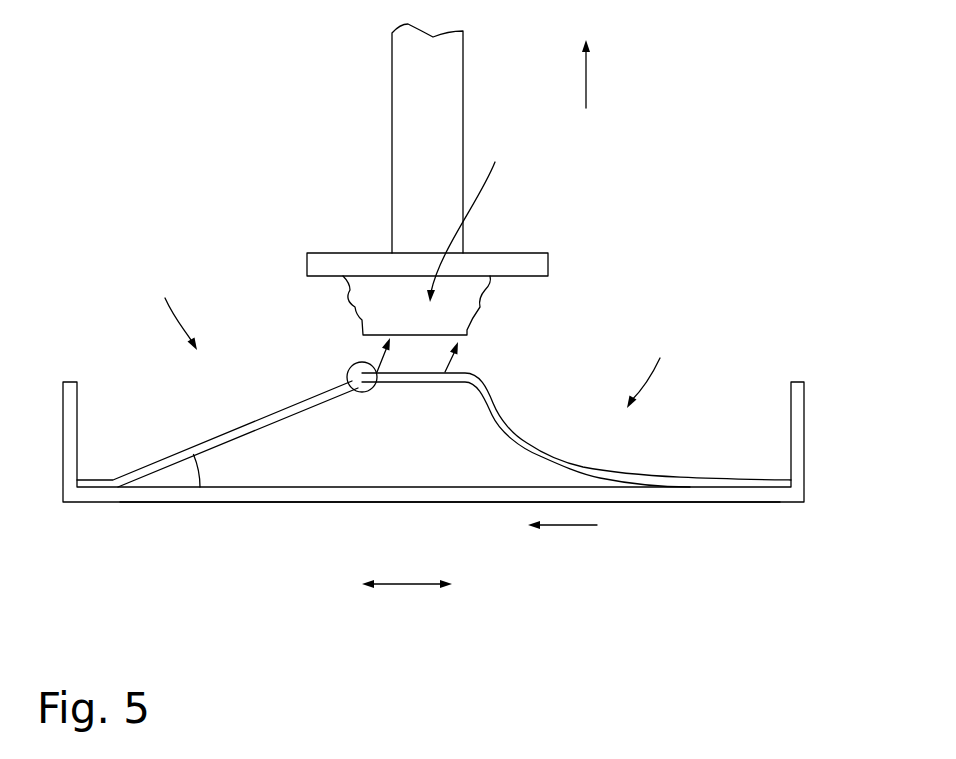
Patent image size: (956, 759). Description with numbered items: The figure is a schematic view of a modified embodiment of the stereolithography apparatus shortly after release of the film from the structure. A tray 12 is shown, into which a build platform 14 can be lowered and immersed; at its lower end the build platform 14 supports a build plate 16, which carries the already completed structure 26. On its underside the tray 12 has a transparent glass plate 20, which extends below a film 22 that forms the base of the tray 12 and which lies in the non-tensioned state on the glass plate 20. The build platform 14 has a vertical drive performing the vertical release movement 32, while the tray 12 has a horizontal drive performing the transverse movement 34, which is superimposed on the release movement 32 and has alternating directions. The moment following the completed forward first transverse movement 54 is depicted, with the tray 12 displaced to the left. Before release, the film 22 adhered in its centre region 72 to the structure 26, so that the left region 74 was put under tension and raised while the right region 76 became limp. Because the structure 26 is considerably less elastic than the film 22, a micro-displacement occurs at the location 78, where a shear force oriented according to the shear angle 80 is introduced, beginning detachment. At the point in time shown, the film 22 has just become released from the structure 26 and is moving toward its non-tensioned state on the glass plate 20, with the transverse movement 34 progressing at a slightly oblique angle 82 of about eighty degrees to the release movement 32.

The tray 12 is at (800, 441).
The build platform 14 is at (447, 73).
The build plate 16 is at (529, 265).
The glass plate 20 is at (262, 495).
The film 22 is at (672, 487).
The structure 26 is at (476, 300).
The release movement 32 is at (586, 87).
The transverse movement 34 is at (407, 586).
The first transverse movement 54 is at (570, 527).
The centre region 72 is at (93, 530).
The left region 74 is at (176, 311).
The right region 76 is at (650, 371).
The micro-displacement location 78 is at (350, 368).
The shear angle 80 is at (178, 476).
The oblique angle 82 is at (390, 382).